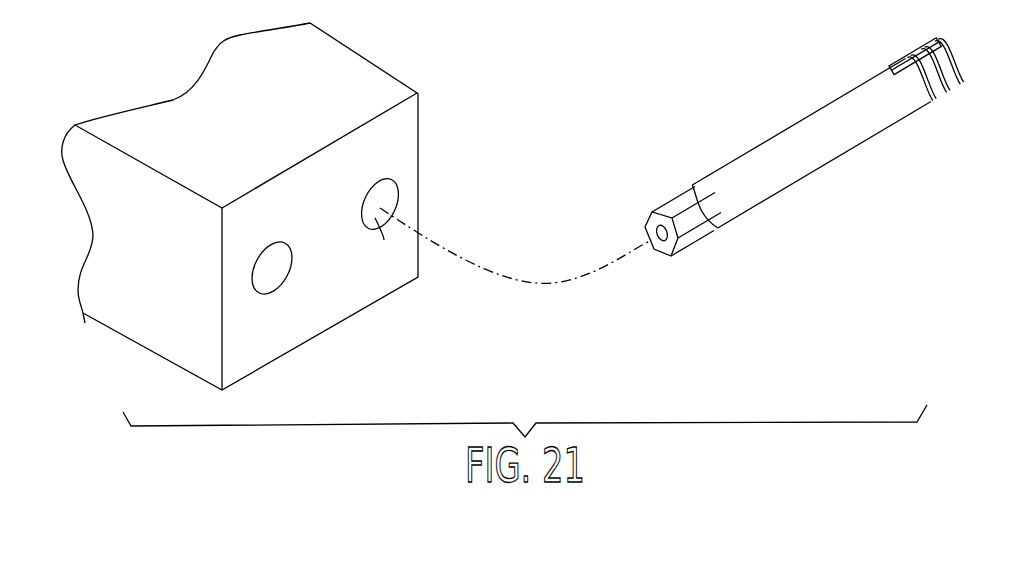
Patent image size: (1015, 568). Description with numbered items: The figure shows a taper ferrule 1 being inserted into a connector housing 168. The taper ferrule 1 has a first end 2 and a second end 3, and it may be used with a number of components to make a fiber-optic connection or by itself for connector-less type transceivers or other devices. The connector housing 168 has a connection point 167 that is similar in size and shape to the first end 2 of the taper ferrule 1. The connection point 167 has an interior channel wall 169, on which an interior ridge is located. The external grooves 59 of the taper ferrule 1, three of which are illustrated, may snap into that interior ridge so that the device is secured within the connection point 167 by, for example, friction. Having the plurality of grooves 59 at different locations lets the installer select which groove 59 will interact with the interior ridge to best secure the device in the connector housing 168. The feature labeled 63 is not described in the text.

The taper ferrule 1 is at (742, 97).
The first end 2 is at (648, 217).
The second end 3 is at (963, 70).
The external grooves 59 is at (960, 84).
The tab 63 is at (927, 60).
The connection point 167 is at (385, 178).
The connector housing 168 is at (278, 337).
The interior channel wall 169 is at (372, 222).